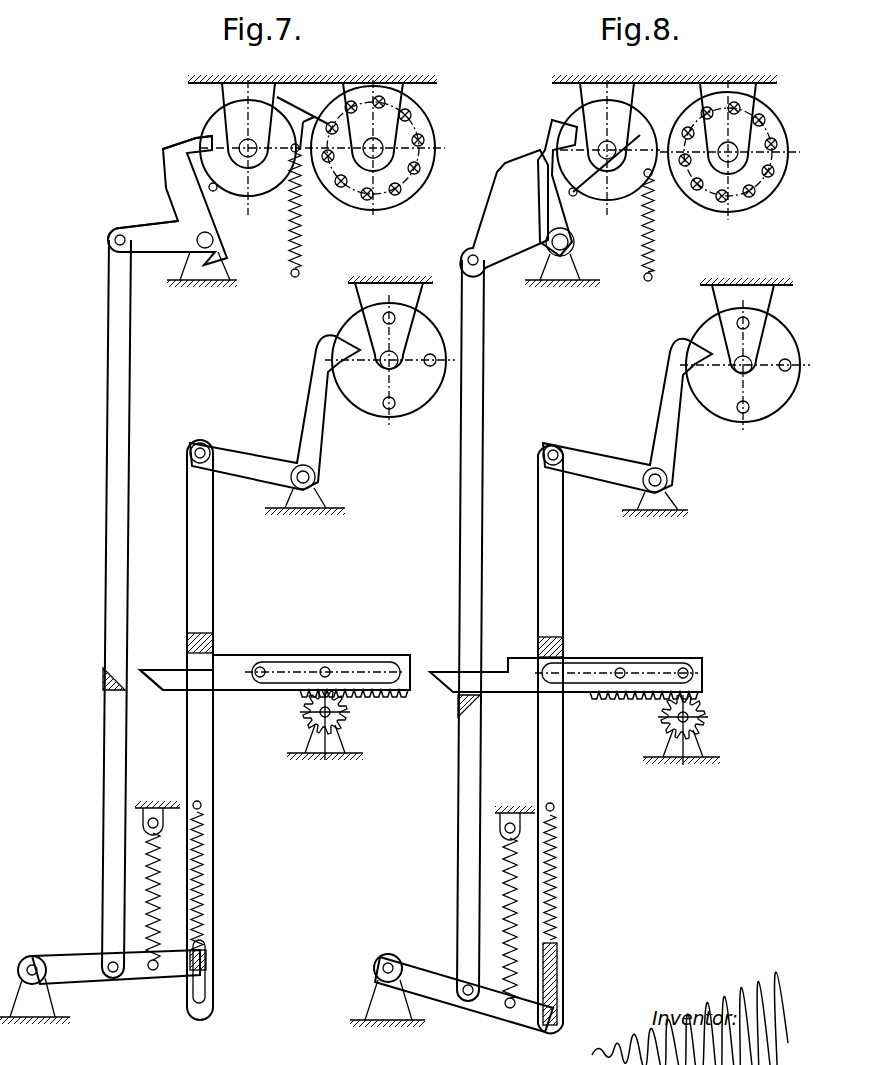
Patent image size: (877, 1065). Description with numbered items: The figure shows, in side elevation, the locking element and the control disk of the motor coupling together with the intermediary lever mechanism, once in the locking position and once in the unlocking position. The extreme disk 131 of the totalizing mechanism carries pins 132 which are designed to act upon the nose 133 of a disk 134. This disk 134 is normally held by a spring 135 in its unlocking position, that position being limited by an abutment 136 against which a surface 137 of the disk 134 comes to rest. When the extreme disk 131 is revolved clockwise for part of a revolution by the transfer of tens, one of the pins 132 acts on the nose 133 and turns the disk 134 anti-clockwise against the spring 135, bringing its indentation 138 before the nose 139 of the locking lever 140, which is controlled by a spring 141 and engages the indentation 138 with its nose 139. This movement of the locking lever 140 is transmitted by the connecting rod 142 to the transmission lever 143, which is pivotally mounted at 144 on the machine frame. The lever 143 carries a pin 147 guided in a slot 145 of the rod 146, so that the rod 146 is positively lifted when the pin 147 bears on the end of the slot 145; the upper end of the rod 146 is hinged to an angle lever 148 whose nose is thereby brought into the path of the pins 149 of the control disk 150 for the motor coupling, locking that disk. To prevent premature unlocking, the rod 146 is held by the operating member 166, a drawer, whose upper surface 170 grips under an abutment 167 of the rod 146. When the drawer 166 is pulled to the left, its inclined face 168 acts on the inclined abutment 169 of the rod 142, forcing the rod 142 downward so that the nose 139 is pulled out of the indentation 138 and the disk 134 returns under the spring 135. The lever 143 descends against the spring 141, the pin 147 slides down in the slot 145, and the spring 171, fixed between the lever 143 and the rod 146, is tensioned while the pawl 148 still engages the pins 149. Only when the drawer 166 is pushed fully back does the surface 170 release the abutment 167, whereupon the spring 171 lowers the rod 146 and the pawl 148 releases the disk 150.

In FIG. 7, the extreme disk 131 is at (402, 147).
In FIG. 7, the pins 132 is at (408, 197).
In FIG. 7, the nose 133 is at (305, 122).
In FIG. 7, the disk 134 is at (250, 167).
In FIG. 7, the spring 135 is at (297, 230).
In FIG. 8, the spring 135 is at (650, 242).
In FIG. 8, the abutment 136 is at (571, 193).
In FIG. 8, the surface 137 is at (575, 243).
In FIG. 7, the indentation 138 is at (203, 140).
In FIG. 7, the nose 139 is at (166, 187).
In FIG. 7, the locking lever 140 is at (165, 232).
In FIG. 7, the spring 141 is at (150, 877).
In FIG. 7, the rod 142 is at (84, 609).
In FIG. 7, the transmission lever 143 is at (100, 974).
In FIG. 7, the pivot 144 is at (32, 963).
In FIG. 7, the slot 145 is at (200, 998).
In FIG. 7, the rod 146 is at (234, 730).
In FIG. 7, the pin 147 is at (205, 964).
In FIG. 7, the angle lever 148 is at (248, 468).
In FIG. 8, the angle lever 148 is at (597, 472).
In FIG. 7, the pins 149 is at (382, 410).
In FIG. 7, the control disk 150 is at (390, 365).
In FIG. 7, the operating member 166 is at (271, 690).
In FIG. 8, the operating member 166 is at (572, 688).
In FIG. 7, the abutment 167 is at (212, 638).
In FIG. 7, the inclined face 168 is at (173, 680).
In FIG. 7, the inclined abutment 169 is at (105, 673).
In FIG. 7, the upper surface 170 is at (238, 662).
In FIG. 7, the spring 171 is at (205, 875).
In FIG. 8, the spring 171 is at (562, 913).